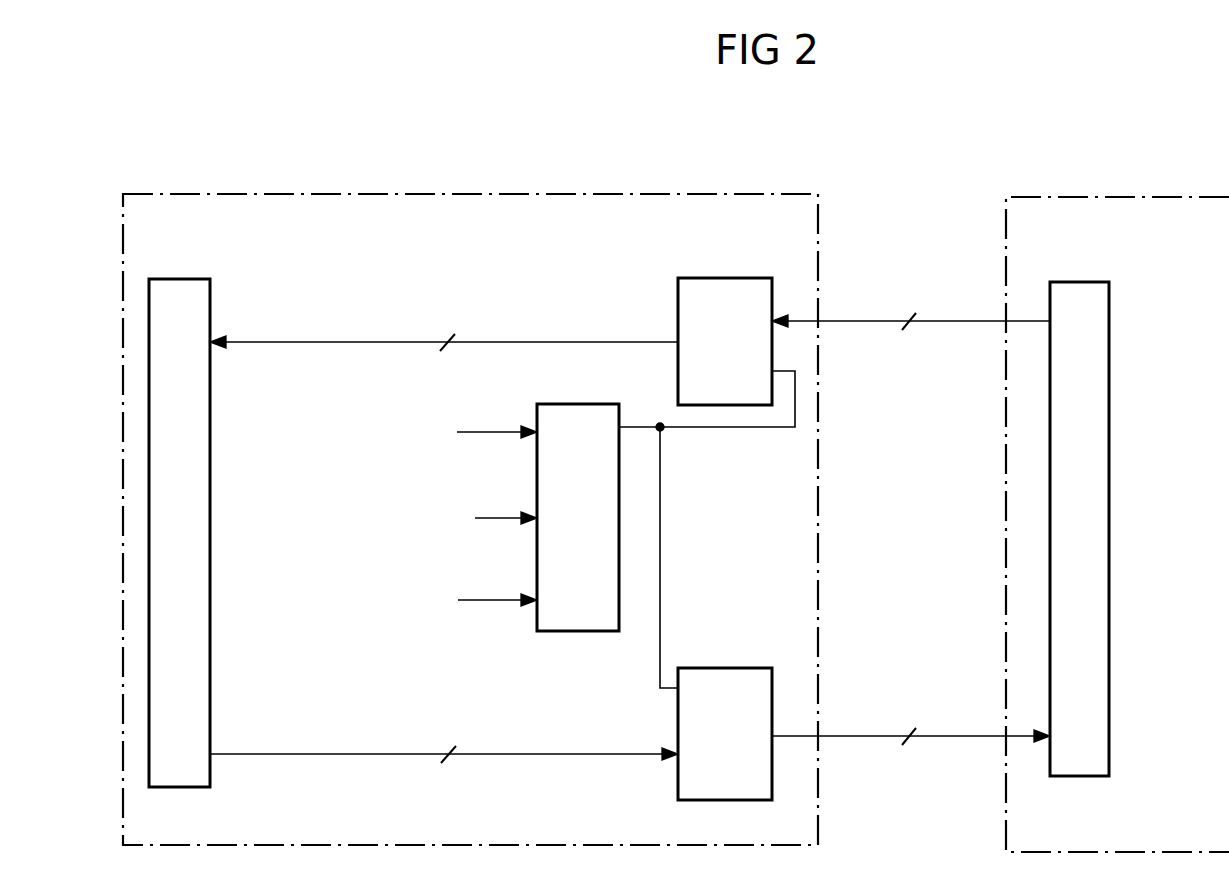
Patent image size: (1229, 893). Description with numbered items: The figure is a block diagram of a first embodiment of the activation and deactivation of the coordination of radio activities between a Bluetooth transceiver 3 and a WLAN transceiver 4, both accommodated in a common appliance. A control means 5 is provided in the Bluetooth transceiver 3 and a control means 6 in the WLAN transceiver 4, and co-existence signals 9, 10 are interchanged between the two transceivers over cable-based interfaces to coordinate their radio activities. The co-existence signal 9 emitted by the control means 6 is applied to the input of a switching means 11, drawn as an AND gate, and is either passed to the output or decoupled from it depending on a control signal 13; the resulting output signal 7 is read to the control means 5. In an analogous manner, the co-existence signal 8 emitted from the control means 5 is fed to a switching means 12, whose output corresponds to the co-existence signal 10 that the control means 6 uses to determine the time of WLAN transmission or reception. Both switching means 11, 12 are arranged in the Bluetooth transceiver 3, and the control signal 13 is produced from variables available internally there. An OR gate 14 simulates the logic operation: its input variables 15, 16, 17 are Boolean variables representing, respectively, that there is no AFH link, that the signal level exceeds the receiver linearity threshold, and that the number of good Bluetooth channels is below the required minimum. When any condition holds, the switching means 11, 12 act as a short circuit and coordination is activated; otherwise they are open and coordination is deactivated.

The Bluetooth transceiver 3 is at (755, 193).
The WLAN transceiver 4 is at (1043, 197).
The control means 5 is at (210, 312).
The control means 6 is at (1109, 382).
The output signal 7 is at (577, 342).
The co-existence signal 8 is at (382, 754).
The co-existence signal 9 is at (861, 321).
The co-existence signal 10 is at (861, 736).
The switching means 11 is at (718, 278).
The switching means 12 is at (718, 668).
The control signal 13 is at (745, 427).
The OR gate 14 is at (580, 631).
The input variable 15 is at (497, 436).
The input variable 16 is at (497, 522).
The input variable 17 is at (497, 604).